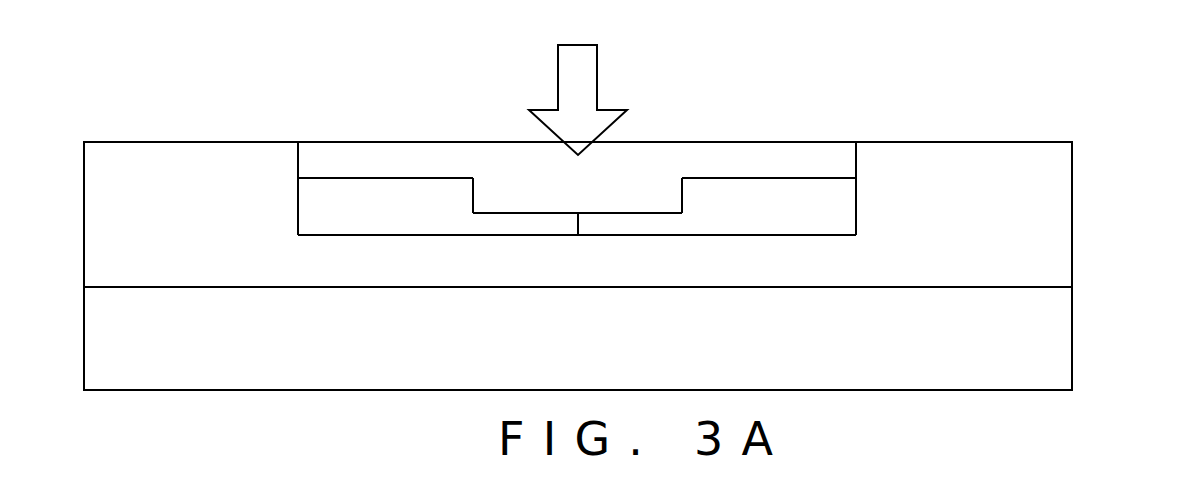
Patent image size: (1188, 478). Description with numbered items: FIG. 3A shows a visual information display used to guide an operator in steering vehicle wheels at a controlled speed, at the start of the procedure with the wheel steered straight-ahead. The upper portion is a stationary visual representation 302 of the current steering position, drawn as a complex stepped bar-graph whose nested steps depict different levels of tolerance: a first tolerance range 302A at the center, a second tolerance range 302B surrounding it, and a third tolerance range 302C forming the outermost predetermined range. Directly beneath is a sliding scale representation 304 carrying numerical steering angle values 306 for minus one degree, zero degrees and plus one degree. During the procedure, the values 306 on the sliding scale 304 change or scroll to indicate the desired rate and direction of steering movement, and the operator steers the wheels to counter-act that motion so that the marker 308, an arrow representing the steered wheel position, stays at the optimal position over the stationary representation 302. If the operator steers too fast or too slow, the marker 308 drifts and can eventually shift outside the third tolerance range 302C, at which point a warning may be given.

The stationary visual representation 302 is at (610, 180).
The first tolerance range 302A is at (527, 202).
The second tolerance range 302B is at (407, 170).
The third tolerance range 302C is at (205, 138).
The sliding scale representation 304 is at (615, 338).
The numerical steering angle values 306 is at (131, 323).
The marker 308 is at (597, 70).